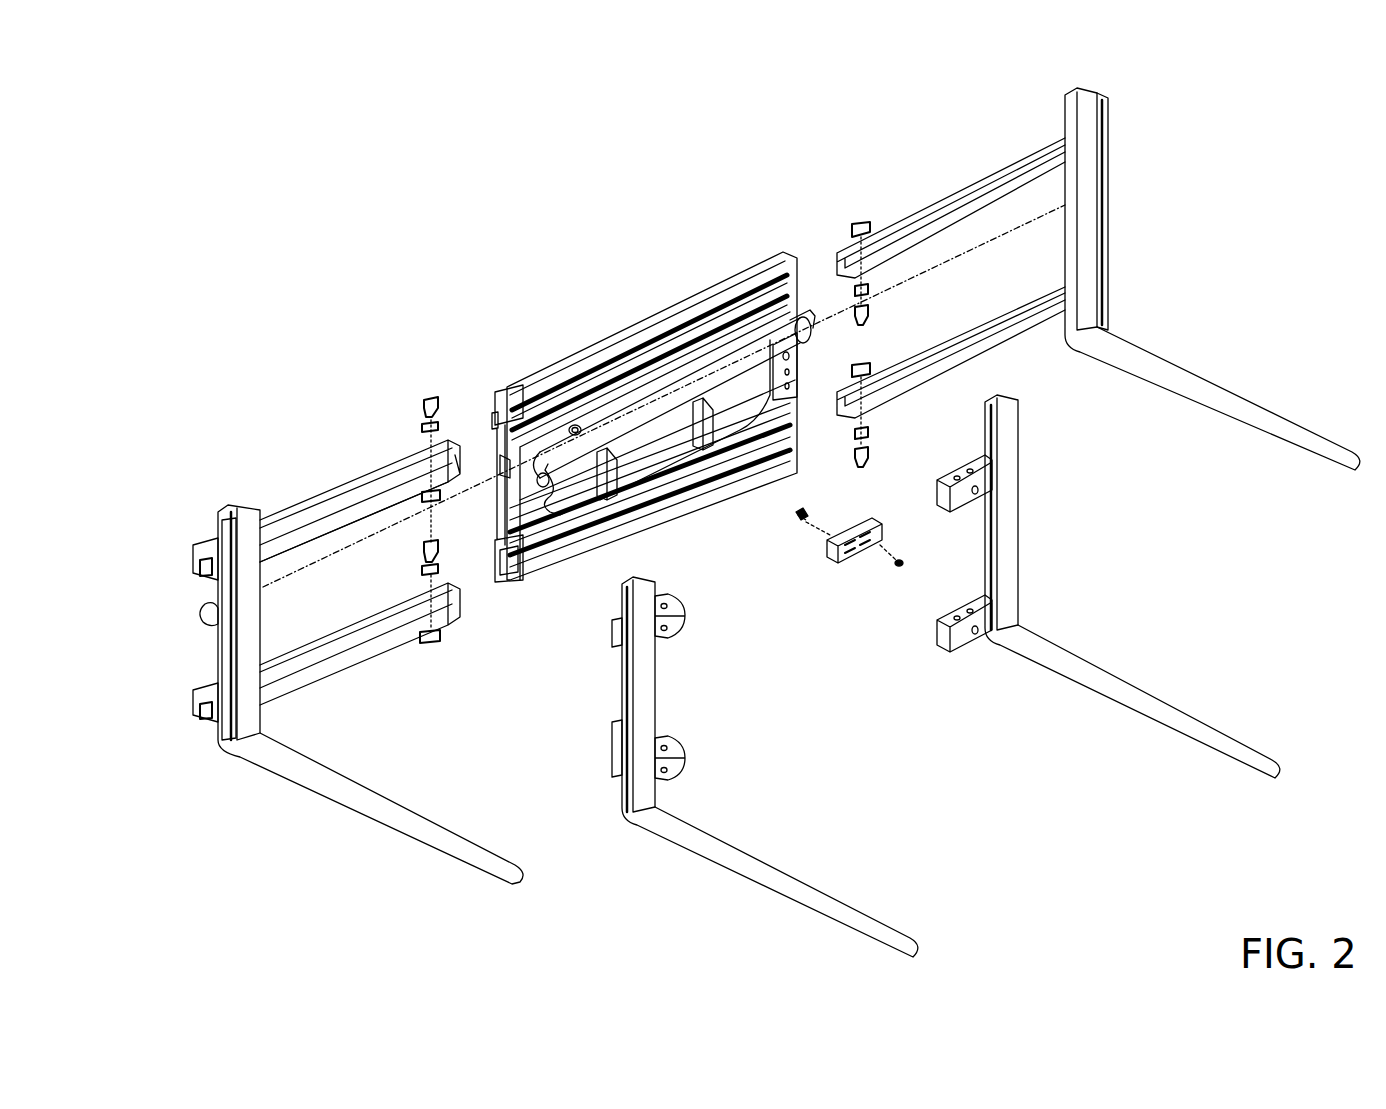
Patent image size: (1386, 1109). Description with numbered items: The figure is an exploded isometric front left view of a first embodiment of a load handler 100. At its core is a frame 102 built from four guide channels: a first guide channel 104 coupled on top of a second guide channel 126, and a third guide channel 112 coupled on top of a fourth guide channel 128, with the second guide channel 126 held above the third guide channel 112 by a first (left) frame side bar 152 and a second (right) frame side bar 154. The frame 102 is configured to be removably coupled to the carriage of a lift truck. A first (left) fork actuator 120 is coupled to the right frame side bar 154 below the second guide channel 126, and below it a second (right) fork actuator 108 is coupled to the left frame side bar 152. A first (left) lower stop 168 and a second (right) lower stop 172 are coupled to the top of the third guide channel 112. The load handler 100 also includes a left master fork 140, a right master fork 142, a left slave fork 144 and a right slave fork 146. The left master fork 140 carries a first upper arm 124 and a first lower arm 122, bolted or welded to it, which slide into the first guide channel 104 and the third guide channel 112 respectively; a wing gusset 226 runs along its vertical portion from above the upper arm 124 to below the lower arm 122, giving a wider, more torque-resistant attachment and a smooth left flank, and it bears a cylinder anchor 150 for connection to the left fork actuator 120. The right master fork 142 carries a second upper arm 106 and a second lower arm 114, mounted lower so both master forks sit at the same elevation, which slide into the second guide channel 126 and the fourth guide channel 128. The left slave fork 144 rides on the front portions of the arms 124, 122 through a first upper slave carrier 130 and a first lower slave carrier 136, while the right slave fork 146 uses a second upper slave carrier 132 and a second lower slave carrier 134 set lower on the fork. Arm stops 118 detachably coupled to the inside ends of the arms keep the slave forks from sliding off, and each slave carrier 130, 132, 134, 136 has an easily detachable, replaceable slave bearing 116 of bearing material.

The load handler 100 is at (370, 148).
The frame 102 is at (600, 337).
The first guide channel 104 is at (567, 373).
The second upper arm 106 is at (935, 195).
The second fork actuator 108 is at (563, 457).
The third guide channel 112 is at (520, 583).
The second lower arm 114 is at (990, 358).
The slave bearing 116 is at (840, 570).
The arm stop 118 is at (418, 503).
The first fork actuator 120 is at (730, 358).
The first lower arm 122 is at (340, 663).
The first upper arm 124 is at (340, 480).
The second guide channel 126 is at (650, 358).
The fourth guide channel 128 is at (743, 470).
The first upper slave carrier 130 is at (677, 632).
The second upper slave carrier 132 is at (950, 513).
The second lower slave carrier 134 is at (948, 652).
The first lower slave carrier 136 is at (682, 760).
The first master fork 140 is at (210, 717).
The second master fork 142 is at (1083, 245).
The first slave fork 144 is at (640, 682).
The second slave fork 146 is at (1008, 458).
The cylinder anchor 150 is at (205, 622).
The first frame side bar 152 is at (490, 467).
The second frame side bar 154 is at (800, 395).
The first lower stop 168 is at (618, 507).
The second lower stop 172 is at (712, 457).
The wing gusset 226 is at (220, 545).